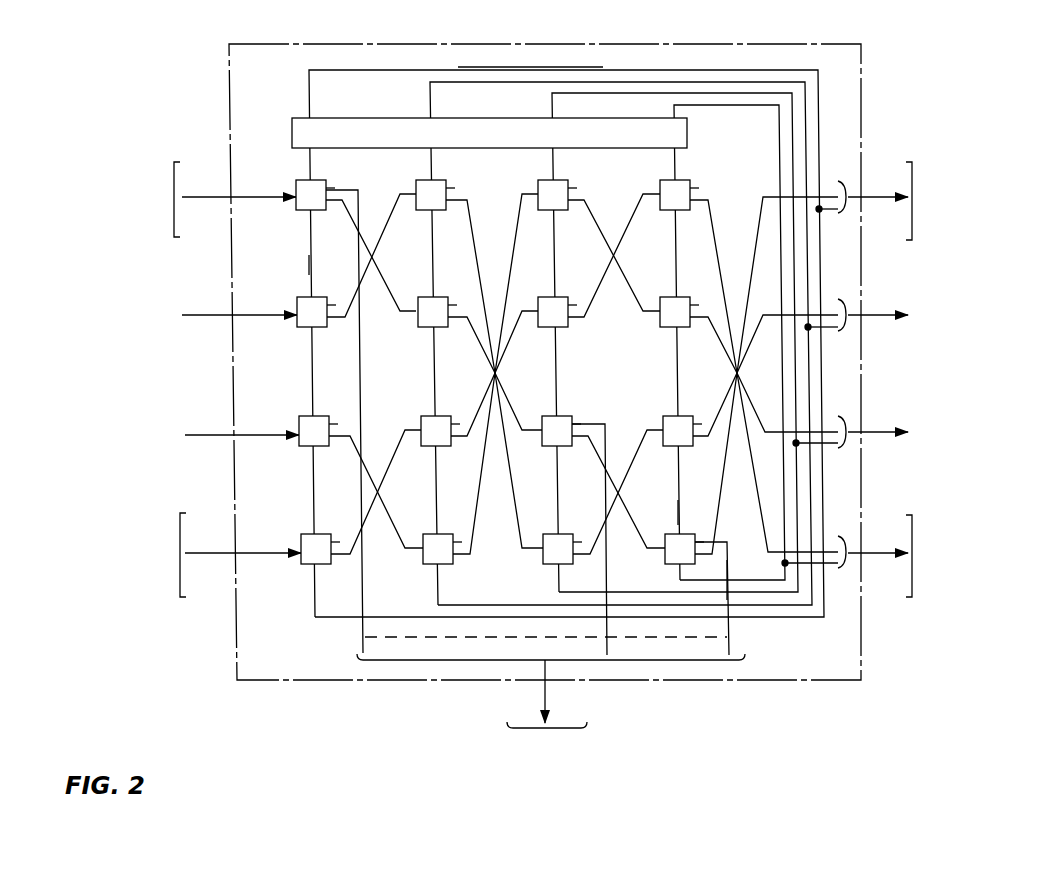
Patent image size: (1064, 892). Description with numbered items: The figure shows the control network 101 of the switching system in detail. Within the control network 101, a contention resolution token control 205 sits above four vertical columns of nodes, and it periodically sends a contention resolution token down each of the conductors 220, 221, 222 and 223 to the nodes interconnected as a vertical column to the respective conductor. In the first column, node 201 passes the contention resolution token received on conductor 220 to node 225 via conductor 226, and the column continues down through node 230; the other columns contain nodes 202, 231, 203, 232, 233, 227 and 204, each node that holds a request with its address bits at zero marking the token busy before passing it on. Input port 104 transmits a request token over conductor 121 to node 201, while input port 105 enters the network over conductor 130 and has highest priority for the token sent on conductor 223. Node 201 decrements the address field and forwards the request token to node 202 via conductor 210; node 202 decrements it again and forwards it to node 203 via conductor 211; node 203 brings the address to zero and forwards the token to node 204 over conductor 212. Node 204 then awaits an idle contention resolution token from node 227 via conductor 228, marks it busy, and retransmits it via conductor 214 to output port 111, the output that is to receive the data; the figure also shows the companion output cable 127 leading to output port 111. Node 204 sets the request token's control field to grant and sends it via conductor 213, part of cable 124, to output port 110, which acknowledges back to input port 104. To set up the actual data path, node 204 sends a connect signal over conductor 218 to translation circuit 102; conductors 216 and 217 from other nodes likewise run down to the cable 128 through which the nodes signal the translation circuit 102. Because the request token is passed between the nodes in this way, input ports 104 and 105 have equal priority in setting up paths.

The control network 101 is at (861, 60).
The translation circuit 102 is at (545, 759).
The input port 104 is at (120, 199).
The input port 105 is at (127, 555).
The output port 110 is at (964, 201).
The output port 111 is at (964, 556).
The conductor 121 is at (198, 195).
The cable 124 is at (877, 199).
The output link to output port 111 127 is at (877, 555).
The cable 128 is at (551, 693).
The input link from input port 105 130 is at (205, 551).
The node 201 is at (297, 211).
The node 202 is at (422, 327).
The node 203 is at (572, 416).
The node 204 is at (669, 567).
The contention resolution token control 205 is at (687, 136).
The conductor 210 is at (336, 208).
The conductor 211 is at (452, 328).
The conductor 212 is at (578, 447).
The conductor 213 is at (716, 520).
The conductor 214 is at (731, 572).
The link to translator circuit 216 is at (363, 639).
The link to translator circuit 217 is at (607, 645).
The conductor 218 is at (729, 635).
The conductor 220 is at (312, 172).
The conductor 221 is at (432, 172).
The conductor 222 is at (554, 172).
The conductor 223 is at (676, 172).
The node 225 is at (299, 331).
The conductor 226 is at (309, 264).
The node 227 is at (663, 446).
The conductor 228 is at (678, 514).
The switching node 230 is at (303, 568).
The switching node 231 is at (426, 448).
The switching node 232 is at (568, 326).
The switching node 233 is at (660, 212).